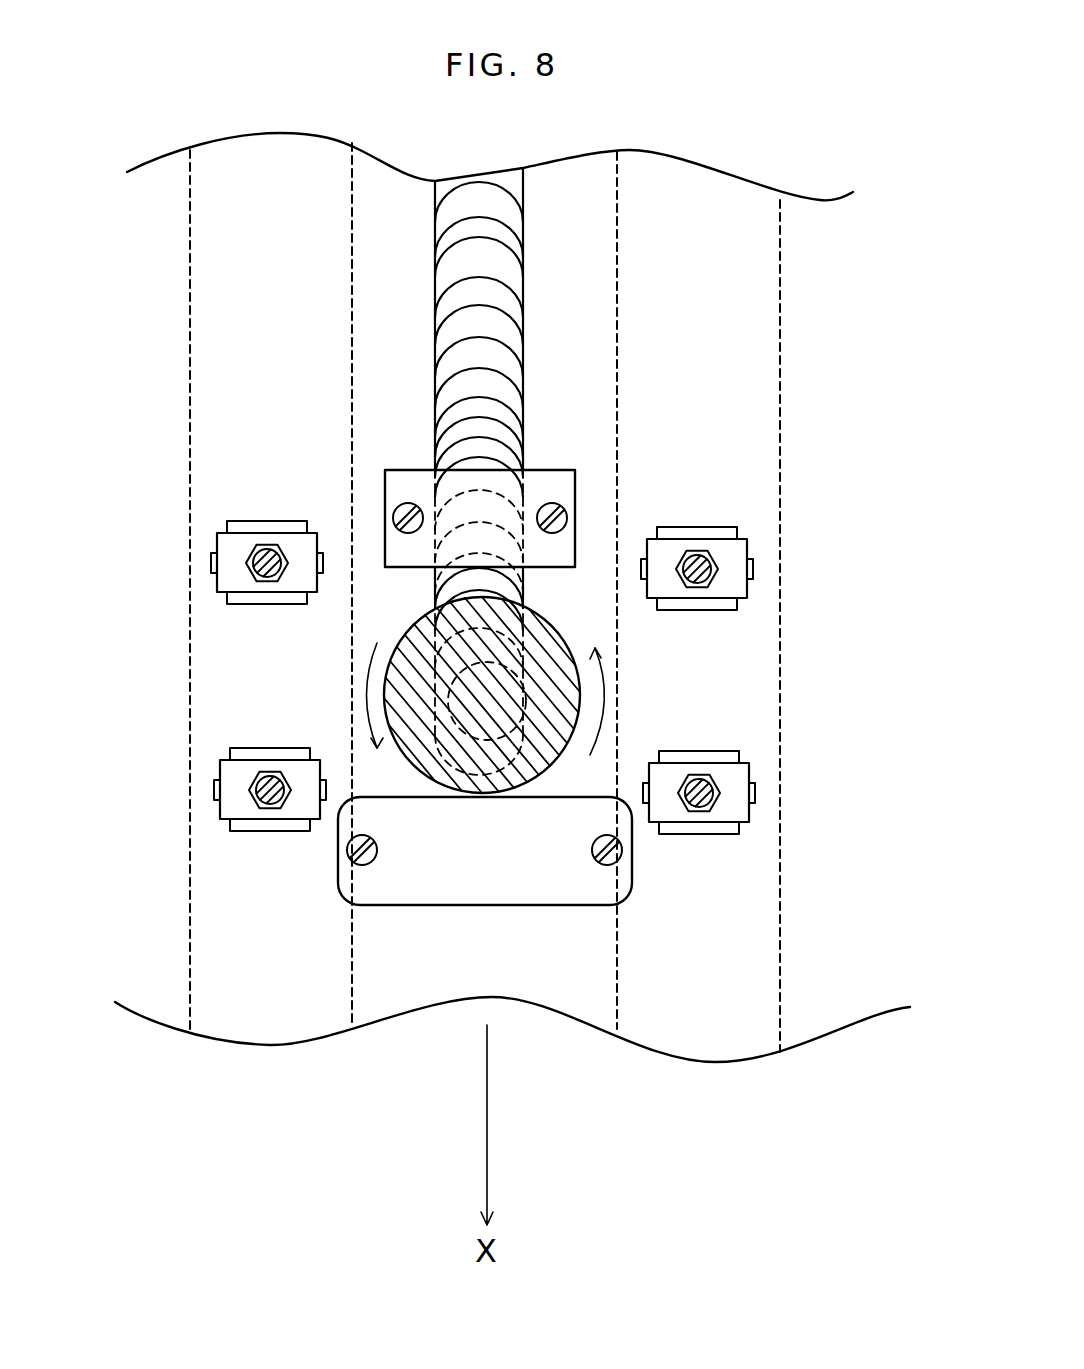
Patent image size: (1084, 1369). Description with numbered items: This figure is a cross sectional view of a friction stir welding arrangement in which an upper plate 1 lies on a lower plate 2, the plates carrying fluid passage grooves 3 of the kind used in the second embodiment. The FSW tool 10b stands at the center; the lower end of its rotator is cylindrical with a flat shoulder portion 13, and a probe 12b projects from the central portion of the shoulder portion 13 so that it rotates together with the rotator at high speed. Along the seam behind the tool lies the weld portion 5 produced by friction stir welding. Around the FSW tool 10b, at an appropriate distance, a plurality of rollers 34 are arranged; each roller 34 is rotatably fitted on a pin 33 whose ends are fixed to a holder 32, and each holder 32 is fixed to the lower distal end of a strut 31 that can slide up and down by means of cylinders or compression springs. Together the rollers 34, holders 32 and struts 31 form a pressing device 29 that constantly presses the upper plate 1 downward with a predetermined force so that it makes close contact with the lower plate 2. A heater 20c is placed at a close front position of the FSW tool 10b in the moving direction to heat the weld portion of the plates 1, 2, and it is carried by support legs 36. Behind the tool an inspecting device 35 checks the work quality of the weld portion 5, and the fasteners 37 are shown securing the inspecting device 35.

The upper plate 1 is at (512, 583).
The lower plate 2 is at (722, 212).
The fluid passage grooves 3 is at (224, 360).
The weld portion 5 is at (497, 284).
The FSW tool 10b is at (537, 695).
The probe 12b is at (510, 706).
The shoulder portion 13 is at (555, 690).
The heater 20c is at (543, 880).
The pressing device 29 is at (513, 595).
The strut 31 is at (700, 550).
The holder 32 is at (735, 553).
The pin 33 is at (756, 569).
The roller 34 is at (712, 606).
The inspecting device 35 is at (545, 485).
The support legs 36 is at (345, 852).
The screw 37 is at (412, 506).